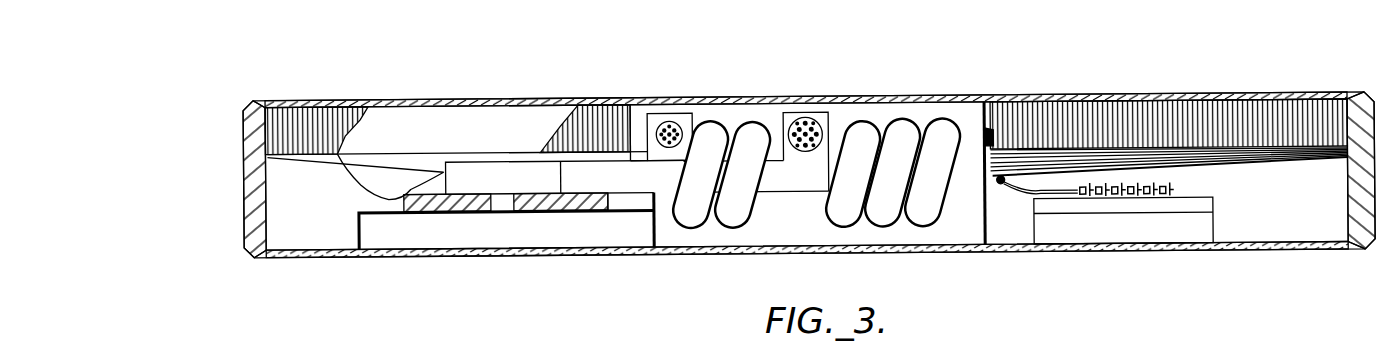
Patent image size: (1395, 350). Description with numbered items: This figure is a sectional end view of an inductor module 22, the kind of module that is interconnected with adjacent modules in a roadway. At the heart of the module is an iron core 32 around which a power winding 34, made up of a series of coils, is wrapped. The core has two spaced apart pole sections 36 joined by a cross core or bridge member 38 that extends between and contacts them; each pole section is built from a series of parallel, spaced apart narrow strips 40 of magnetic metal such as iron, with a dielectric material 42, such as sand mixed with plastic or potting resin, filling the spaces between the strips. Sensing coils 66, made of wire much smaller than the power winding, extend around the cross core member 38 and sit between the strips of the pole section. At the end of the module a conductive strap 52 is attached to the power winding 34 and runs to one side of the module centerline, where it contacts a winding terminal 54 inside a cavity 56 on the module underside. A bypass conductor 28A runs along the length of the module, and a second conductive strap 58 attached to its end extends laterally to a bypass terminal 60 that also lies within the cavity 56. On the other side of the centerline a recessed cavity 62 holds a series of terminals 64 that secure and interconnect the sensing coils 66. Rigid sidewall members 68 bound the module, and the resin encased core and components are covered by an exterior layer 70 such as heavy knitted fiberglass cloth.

The module 22 is at (780, 80).
The bypass conductor 28A is at (813, 127).
The iron core 32 is at (1275, 168).
The power winding 34 is at (670, 125).
The pole sections 36 is at (600, 122).
The cross core member 38 is at (1213, 162).
The narrow strips 40 is at (1073, 152).
The dielectric material 42 is at (310, 223).
The conductive strap 52 is at (527, 175).
The winding terminal 54 is at (457, 200).
The cavity 56 is at (370, 233).
The conductive strap 58 is at (772, 180).
The bypass terminal 60 is at (553, 203).
The recessed cavity 62 is at (1035, 228).
The terminals 64 is at (1112, 198).
The sensing coils 66 is at (1002, 160).
The sidewall members 68 is at (255, 101).
The exterior layer 70 is at (377, 105).